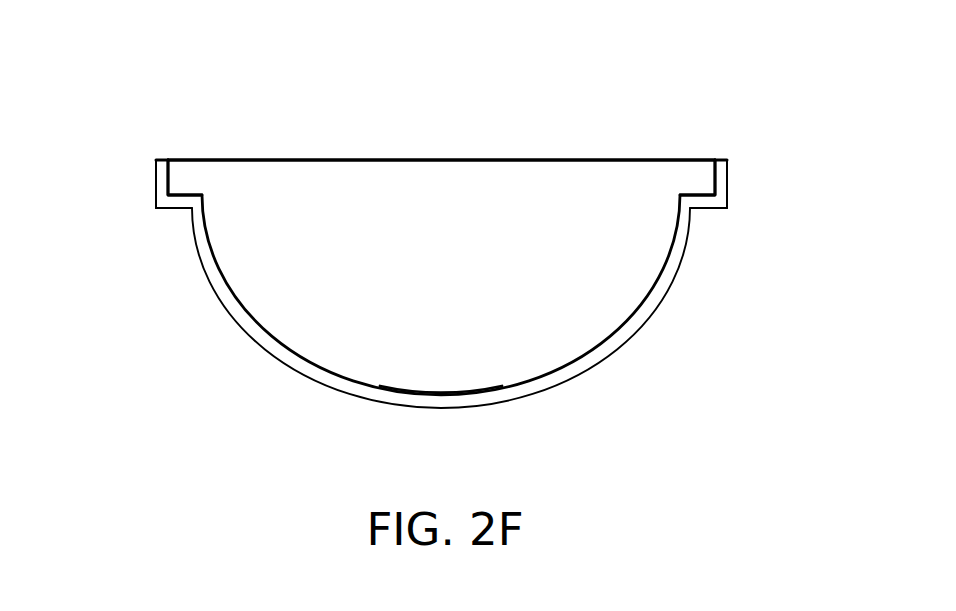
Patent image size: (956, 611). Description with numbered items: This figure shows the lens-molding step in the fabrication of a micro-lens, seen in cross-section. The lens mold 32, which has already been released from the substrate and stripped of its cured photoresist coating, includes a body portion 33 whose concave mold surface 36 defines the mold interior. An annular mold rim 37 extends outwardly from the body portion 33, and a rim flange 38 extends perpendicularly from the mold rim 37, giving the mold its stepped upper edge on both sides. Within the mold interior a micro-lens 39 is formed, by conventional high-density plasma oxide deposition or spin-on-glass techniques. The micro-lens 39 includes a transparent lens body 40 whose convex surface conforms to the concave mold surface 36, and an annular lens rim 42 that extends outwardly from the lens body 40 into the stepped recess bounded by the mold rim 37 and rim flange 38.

The lens mold 32 is at (235, 317).
The body portion 33 is at (660, 297).
The concave mold surface 36 is at (435, 395).
The annular mold rim 37 is at (158, 203).
The rim flange 38 is at (156, 175).
The micro-lens 39 is at (459, 159).
The transparent lens body 40 is at (557, 177).
The annular lens rim 42 is at (197, 178).